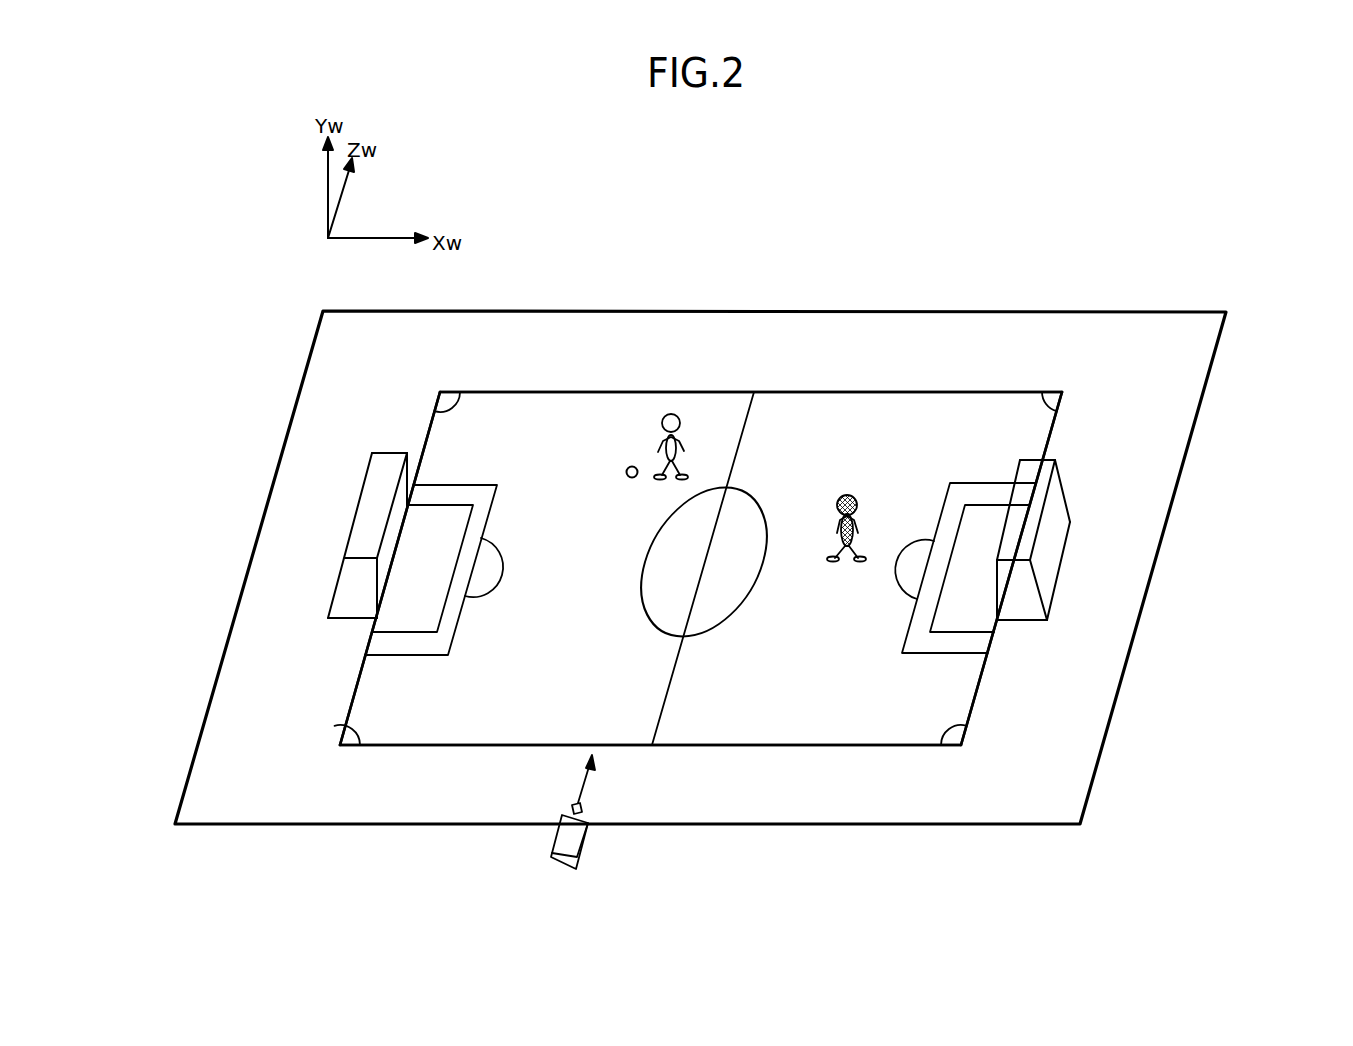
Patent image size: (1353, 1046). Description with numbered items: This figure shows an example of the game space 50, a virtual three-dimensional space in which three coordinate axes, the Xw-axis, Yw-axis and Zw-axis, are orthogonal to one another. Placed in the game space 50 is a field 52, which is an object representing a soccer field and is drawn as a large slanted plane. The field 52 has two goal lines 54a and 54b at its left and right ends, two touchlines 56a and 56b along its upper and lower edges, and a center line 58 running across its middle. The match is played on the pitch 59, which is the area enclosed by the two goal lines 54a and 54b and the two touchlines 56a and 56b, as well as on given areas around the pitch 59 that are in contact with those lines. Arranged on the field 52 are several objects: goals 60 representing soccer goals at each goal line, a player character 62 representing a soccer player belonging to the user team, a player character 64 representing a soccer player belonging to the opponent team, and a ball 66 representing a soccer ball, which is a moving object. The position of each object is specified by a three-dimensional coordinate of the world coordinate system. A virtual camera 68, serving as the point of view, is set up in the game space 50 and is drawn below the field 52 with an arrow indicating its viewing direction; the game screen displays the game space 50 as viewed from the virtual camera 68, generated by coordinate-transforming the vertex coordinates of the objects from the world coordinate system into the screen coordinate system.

The game space 50 is at (753, 227).
The field 52 is at (908, 330).
The goal line 54a is at (357, 683).
The goal line 54b is at (978, 700).
The touchline 56a is at (970, 392).
The touchline 56b is at (832, 747).
The center line 58 is at (663, 700).
The pitch 59 is at (789, 407).
The goal 60 is at (330, 584).
The player character 62 is at (662, 423).
The player character 64 is at (848, 494).
The ball 66 is at (626, 472).
The virtual camera 68 is at (588, 840).